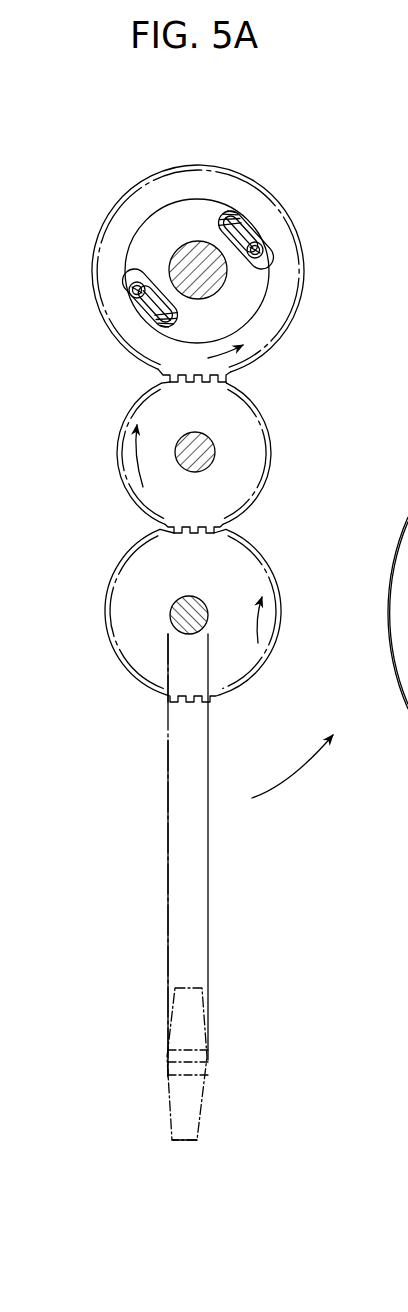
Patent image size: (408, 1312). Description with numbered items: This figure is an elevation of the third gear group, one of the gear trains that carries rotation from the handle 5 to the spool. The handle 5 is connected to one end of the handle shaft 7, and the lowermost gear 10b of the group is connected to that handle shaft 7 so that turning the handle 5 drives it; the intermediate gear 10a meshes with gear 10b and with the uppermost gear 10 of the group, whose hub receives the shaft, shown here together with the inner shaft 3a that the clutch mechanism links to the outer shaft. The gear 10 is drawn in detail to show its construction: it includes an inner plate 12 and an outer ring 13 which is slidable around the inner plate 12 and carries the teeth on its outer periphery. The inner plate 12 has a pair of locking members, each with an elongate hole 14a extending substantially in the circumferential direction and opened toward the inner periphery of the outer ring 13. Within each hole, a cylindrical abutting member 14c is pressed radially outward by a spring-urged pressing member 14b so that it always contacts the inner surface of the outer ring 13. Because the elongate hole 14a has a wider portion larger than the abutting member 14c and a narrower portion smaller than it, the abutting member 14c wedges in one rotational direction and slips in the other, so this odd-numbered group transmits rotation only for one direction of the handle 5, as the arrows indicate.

The handle 5 is at (200, 849).
The handle shaft 7 is at (171, 613).
The gear 10 is at (307, 243).
The gear 10a is at (272, 452).
The gear 10b is at (283, 612).
The inner plate 12 is at (205, 207).
The outer ring 13 is at (147, 197).
The elongate hole 14a is at (142, 311).
The pressing member 14b is at (157, 318).
The abutting member 14c is at (128, 290).
The inner shaft 3a is at (224, 282).